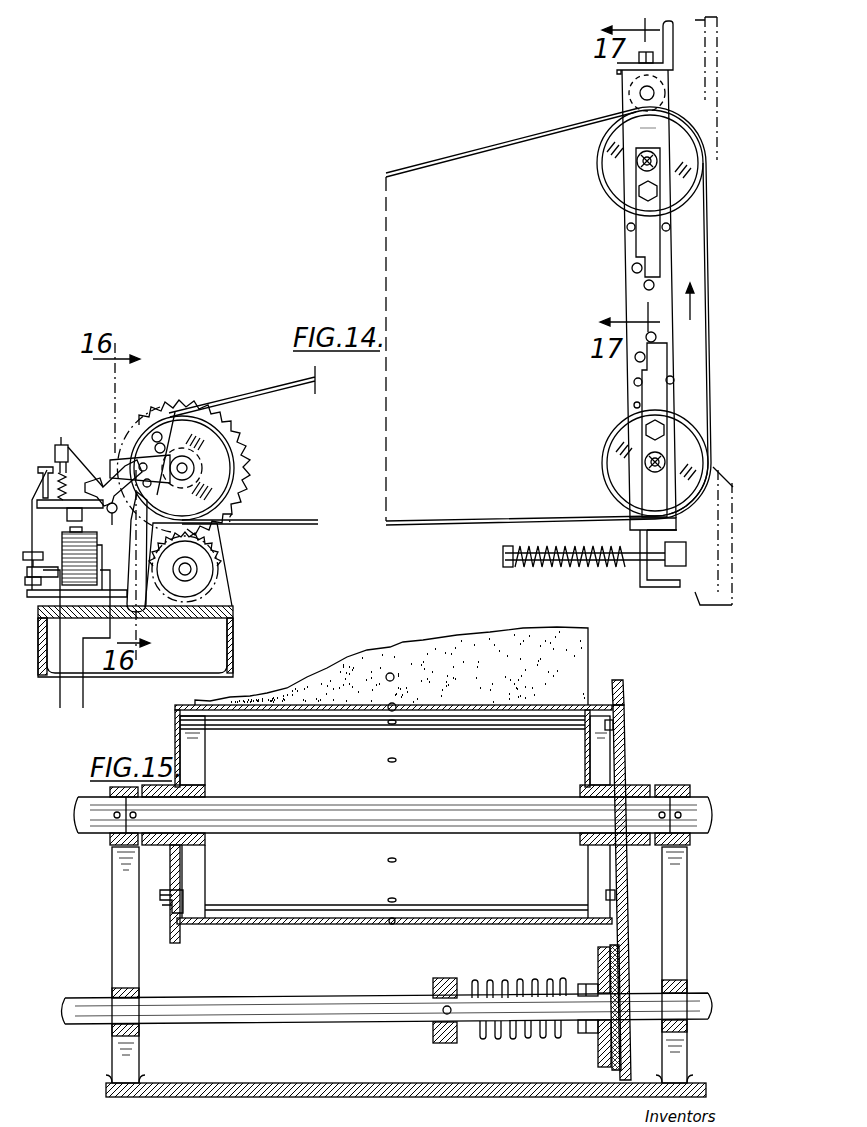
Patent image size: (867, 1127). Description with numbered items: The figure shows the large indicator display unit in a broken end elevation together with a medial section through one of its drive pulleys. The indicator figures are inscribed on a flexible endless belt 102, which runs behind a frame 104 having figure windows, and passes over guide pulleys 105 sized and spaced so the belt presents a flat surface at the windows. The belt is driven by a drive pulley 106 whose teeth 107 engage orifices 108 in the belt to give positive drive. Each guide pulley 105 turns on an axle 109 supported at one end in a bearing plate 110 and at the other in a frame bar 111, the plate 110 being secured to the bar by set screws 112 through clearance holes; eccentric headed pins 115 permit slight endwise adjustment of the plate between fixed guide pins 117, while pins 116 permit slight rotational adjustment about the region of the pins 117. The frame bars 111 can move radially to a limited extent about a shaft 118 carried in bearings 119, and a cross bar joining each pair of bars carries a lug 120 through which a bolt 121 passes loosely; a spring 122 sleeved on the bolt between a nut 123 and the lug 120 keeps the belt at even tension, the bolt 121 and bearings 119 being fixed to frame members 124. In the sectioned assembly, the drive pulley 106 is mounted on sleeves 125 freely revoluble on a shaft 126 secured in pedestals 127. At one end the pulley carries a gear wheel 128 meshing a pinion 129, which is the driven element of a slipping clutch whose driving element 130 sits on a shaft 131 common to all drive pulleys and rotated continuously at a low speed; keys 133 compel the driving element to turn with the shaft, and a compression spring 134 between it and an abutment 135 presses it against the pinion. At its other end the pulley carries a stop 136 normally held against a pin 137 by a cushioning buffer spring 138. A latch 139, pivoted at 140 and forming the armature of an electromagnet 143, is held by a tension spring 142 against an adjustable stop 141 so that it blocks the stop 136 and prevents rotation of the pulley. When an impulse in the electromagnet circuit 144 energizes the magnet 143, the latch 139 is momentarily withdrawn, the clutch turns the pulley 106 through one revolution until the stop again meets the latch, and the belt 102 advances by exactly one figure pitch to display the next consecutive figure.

In FIG. 14, the flexible endless belt 102 is at (448, 157).
In FIG. 15, the flexible endless belt 102 is at (611, 684).
In FIG. 14, the frame 104 is at (700, 97).
In FIG. 14, the guide pulley 105 is at (600, 176).
In FIG. 14, the drive pulley 106 is at (238, 438).
In FIG. 15, the drive pulley 106 is at (393, 814).
In FIG. 14, the teeth 107 is at (244, 492).
In FIG. 15, the teeth 107 is at (400, 704).
In FIG. 15, the orifices 108 is at (391, 666).
In FIG. 14, the axle 109 is at (637, 168).
In FIG. 14, the bearing plate 110 is at (660, 265).
In FIG. 14, the frame bar 111 is at (647, 133).
In FIG. 14, the set screw 112 is at (658, 198).
In FIG. 14, the eccentric headed pin 115 is at (644, 289).
In FIG. 14, the eccentric headed pin 116 is at (632, 272).
In FIG. 14, the fixed guide pin 117 is at (628, 230).
In FIG. 14, the shaft 118 is at (640, 100).
In FIG. 14, the bearing 119 is at (668, 73).
In FIG. 14, the lug 120 is at (630, 528).
In FIG. 14, the bolt 121 is at (659, 567).
In FIG. 14, the spring 122 is at (597, 567).
In FIG. 14, the nut 123 is at (535, 569).
In FIG. 14, the fixed frame member 124 is at (617, 68).
In FIG. 15, the sleeve 125 is at (207, 787).
In FIG. 14, the shaft 126 is at (195, 466).
In FIG. 15, the shaft 126 is at (492, 795).
In FIG. 14, the pedestal 127 is at (234, 598).
In FIG. 15, the pedestal 127 is at (112, 928).
In FIG. 14, the gear wheel 128 is at (246, 468).
In FIG. 15, the gear wheel 128 is at (626, 766).
In FIG. 14, the pinion 129 is at (218, 546).
In FIG. 15, the pinion 129 is at (628, 985).
In FIG. 15, the driving element 130 is at (592, 950).
In FIG. 14, the shaft 131 is at (197, 573).
In FIG. 15, the shaft 131 is at (302, 998).
In FIG. 15, the key 133 is at (582, 1036).
In FIG. 15, the compression spring 134 is at (525, 1040).
In FIG. 15, the abutment 135 is at (447, 1044).
In FIG. 14, the stop 136 is at (177, 402).
In FIG. 15, the stop 136 is at (182, 940).
In FIG. 14, the pin 137 is at (158, 482).
In FIG. 15, the pin 137 is at (160, 915).
In FIG. 14, the cushioning buffer spring 138 is at (150, 415).
In FIG. 14, the latch 139 is at (60, 510).
In FIG. 14, the pivot 140 is at (113, 527).
In FIG. 14, the adjustable stop 141 is at (44, 464).
In FIG. 14, the tension spring 142 is at (76, 462).
In FIG. 14, the electromagnet 143 is at (62, 561).
In FIG. 14, the electromagnet circuit 144 is at (83, 708).